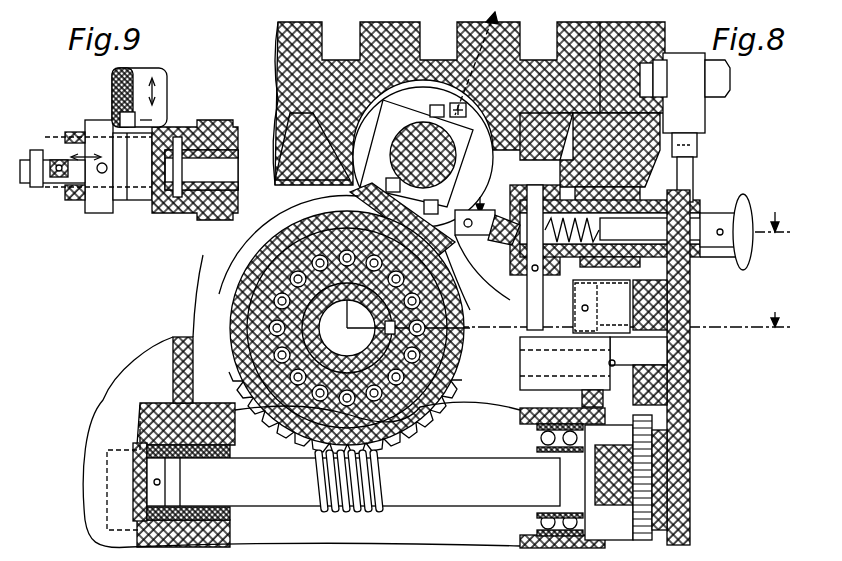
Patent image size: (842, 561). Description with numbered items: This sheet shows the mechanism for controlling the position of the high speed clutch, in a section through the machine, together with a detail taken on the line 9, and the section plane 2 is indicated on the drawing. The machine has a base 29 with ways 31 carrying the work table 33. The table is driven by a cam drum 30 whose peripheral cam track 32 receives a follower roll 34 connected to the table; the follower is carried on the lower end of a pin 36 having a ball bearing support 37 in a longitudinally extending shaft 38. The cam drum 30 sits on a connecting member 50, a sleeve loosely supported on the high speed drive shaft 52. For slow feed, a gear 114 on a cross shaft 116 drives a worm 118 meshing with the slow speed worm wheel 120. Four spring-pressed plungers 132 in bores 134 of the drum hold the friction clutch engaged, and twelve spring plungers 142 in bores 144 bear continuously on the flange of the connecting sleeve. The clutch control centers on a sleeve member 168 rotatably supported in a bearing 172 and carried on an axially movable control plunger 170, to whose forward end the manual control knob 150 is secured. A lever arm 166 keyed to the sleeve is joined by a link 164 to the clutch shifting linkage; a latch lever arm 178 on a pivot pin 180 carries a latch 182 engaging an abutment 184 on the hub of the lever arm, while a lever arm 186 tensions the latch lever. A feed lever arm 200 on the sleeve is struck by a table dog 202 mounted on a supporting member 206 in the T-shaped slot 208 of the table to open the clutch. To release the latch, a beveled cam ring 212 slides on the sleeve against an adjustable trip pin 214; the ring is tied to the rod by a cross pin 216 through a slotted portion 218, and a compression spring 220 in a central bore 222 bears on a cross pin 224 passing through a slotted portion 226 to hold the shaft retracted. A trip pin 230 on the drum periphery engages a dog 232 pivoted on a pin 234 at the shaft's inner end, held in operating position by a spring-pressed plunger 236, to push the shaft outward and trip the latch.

In FIG. 8, the section line 2- 2 is at (602, 169).
In FIG. 8, the section line 9- 9 is at (626, 210).
In FIG. 8, the base 29 is at (165, 440).
In FIG. 8, the cam drum 30 is at (250, 250).
In FIG. 8, the ways 31 is at (306, 140).
In FIG. 8, the cam track 32 is at (268, 222).
In FIG. 8, the work table 33 is at (598, 80).
In FIG. 8, the follower roll 34 is at (345, 193).
In FIG. 8, the pin 36 is at (455, 108).
In FIG. 8, the ball bearing support 37 is at (427, 120).
In FIG. 8, the shaft 38 is at (469, 103).
In FIG. 8, the connecting member 50 is at (340, 300).
In FIG. 8, the high speed drive shaft 52 is at (375, 340).
In FIG. 8, the gear 114 is at (645, 478).
In FIG. 8, the cross shaft 116 is at (290, 490).
In FIG. 8, the worm 118 is at (370, 512).
In FIG. 8, the slow speed worm wheel 120 is at (405, 440).
In FIG. 8, the spring-pressed plungers 132 is at (340, 258).
In FIG. 8, the bores 134 is at (240, 375).
In FIG. 8, the spring plungers 142 is at (283, 348).
In FIG. 8, the bores 144 is at (300, 300).
In FIG. 8, the manual control knob 150 is at (752, 240).
In FIG. 8, the link 164 is at (620, 310).
In FIG. 9, the lever arm 166 is at (142, 215).
In FIG. 8, the lever arm 166 is at (640, 313).
In FIG. 8, the sleeve member 168 is at (716, 252).
In FIG. 9, the control pin or plunger 170 is at (78, 205).
In FIG. 8, the control pin or plunger 170 is at (708, 215).
In FIG. 8, the bearing 172 is at (675, 283).
In FIG. 9, the latch lever arm 178 is at (150, 78).
In FIG. 8, the latch lever arm 178 is at (567, 363).
In FIG. 8, the pivot pin 180 is at (665, 356).
In FIG. 9, the latch 182 is at (172, 95).
In FIG. 9, the abutment 184 is at (168, 118).
In FIG. 8, the lever arm 186 is at (650, 398).
In FIG. 8, the feed lever arm 200 is at (695, 160).
In FIG. 8, the table dog 202 is at (690, 135).
In FIG. 8, the supporting member 206 is at (722, 57).
In FIG. 8, the T-shaped slot 208 is at (667, 78).
In FIG. 9, the cam ring 212 is at (100, 213).
In FIG. 8, the cam ring 212 is at (610, 150).
In FIG. 9, the trip pin 214 is at (118, 88).
In FIG. 9, the cross pin 216 is at (95, 195).
In FIG. 8, the cross pin 216 is at (547, 257).
In FIG. 8, the slotted portion 218 is at (539, 246).
In FIG. 9, the compression spring 220 is at (120, 200).
In FIG. 8, the compression spring 220 is at (610, 260).
In FIG. 9, the central bore 222 is at (195, 170).
In FIG. 8, the central bore 222 is at (694, 168).
In FIG. 9, the cross pin 224 is at (178, 198).
In FIG. 8, the cross pin 224 is at (630, 228).
In FIG. 9, the slotted portion 226 is at (162, 210).
In FIG. 8, the slotted portion 226 is at (607, 191).
In FIG. 8, the trip pin 230 is at (482, 267).
In FIG. 9, the dog 232 is at (25, 165).
In FIG. 8, the dog 232 is at (501, 240).
In FIG. 9, the pin 234 is at (52, 138).
In FIG. 8, the pin 234 is at (475, 206).
In FIG. 9, the spring-pressed plunger 236 is at (56, 178).
In FIG. 8, the spring-pressed plunger 236 is at (473, 284).